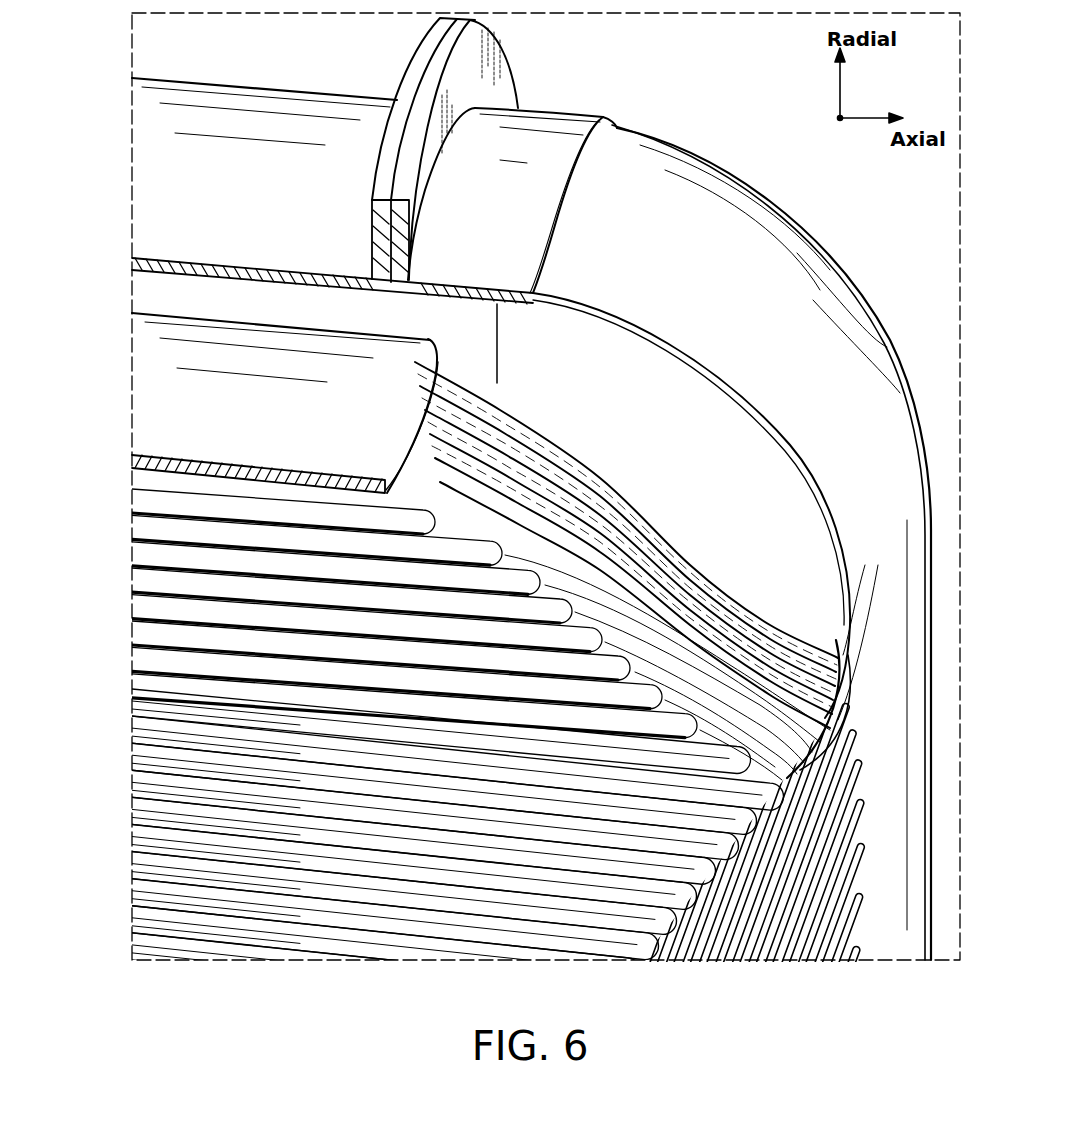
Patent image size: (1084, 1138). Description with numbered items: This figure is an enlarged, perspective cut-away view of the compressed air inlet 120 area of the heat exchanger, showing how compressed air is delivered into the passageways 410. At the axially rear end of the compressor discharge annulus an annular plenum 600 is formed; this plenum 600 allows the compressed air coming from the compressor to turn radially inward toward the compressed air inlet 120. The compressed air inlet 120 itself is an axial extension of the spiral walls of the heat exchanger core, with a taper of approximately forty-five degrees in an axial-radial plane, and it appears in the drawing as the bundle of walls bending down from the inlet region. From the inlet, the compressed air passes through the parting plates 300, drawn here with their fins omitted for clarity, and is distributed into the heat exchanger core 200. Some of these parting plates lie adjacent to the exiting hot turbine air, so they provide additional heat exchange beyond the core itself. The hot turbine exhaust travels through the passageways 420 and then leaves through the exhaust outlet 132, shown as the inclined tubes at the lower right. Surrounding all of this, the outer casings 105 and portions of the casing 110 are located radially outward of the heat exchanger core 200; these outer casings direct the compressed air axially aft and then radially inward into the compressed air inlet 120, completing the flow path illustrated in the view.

The outer casing 105 is at (236, 195).
The outer casing 110 is at (722, 288).
The compressed air inlet 120 is at (714, 562).
The exhaust outlet 132 is at (795, 905).
The heat exchanger core 200 is at (441, 731).
The parting plates 300 is at (147, 663).
The passageways 410 is at (148, 479).
The passageways 420 is at (148, 862).
The annular plenum 600 is at (674, 464).